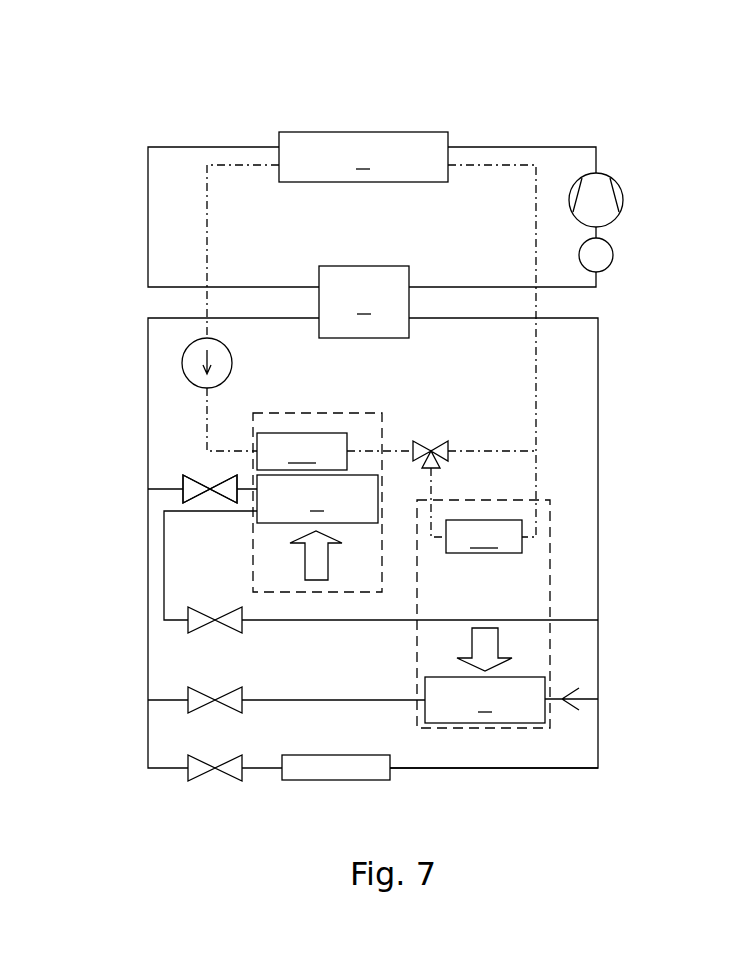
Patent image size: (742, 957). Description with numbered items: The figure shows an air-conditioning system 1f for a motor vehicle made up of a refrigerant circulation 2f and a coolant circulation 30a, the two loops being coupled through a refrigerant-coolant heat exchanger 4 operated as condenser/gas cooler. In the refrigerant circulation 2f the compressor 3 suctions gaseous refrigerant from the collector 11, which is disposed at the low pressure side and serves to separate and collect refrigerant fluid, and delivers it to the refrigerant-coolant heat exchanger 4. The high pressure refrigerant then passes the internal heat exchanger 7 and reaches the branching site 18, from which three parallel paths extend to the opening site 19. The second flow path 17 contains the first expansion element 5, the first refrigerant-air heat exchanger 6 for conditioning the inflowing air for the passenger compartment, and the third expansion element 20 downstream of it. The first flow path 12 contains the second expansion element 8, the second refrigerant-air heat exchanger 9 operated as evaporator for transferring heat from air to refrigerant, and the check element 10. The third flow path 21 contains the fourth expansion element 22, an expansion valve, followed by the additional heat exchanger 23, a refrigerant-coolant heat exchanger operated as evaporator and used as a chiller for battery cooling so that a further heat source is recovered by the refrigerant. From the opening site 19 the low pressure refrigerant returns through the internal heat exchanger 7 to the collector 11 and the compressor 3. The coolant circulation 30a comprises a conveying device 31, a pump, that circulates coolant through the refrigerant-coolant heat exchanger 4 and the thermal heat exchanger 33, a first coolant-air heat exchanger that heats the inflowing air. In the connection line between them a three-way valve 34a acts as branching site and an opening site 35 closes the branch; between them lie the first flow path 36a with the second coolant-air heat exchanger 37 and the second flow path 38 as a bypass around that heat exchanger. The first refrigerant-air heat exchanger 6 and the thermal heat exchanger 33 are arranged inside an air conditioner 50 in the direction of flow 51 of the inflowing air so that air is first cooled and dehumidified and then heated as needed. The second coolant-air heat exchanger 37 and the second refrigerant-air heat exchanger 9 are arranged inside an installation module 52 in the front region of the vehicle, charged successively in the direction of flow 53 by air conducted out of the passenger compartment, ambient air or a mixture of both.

The air-conditioning system 1f is at (560, 124).
The refrigerant circulation 2f is at (137, 262).
The compressor 3 is at (592, 190).
The refrigerant-coolant heat exchanger 4 is at (363, 157).
The first expansion element 5 is at (188, 495).
The first refrigerant-air heat exchanger 6 is at (317, 499).
The internal heat exchanger 7 is at (364, 302).
The second expansion element 8 is at (201, 696).
The second refrigerant-air heat exchanger 9 is at (485, 700).
The check element 10 is at (566, 701).
The collector 11 is at (598, 256).
The first flow path 12 is at (281, 703).
The second flow path 17 is at (281, 625).
The branching site 18 is at (148, 489).
The opening site 19 is at (599, 621).
The third expansion element 20 is at (198, 607).
The third flow path 21 is at (420, 770).
The fourth expansion element 22 is at (200, 774).
The additional heat exchanger 23 is at (332, 767).
The coolant circulation 30a is at (210, 265).
The conveying device 31 is at (215, 368).
The thermal heat exchanger 33 is at (302, 451).
The three-way valve 34a is at (433, 448).
The opening site 35 is at (537, 447).
The first flow path 36a is at (538, 498).
The second coolant-air heat exchanger 37 is at (484, 536).
The second flow path 38 is at (486, 448).
The air conditioner 50 is at (335, 412).
The direction of flow 51 is at (320, 573).
The installation module 52 is at (521, 730).
The direction of flow 53 is at (485, 648).